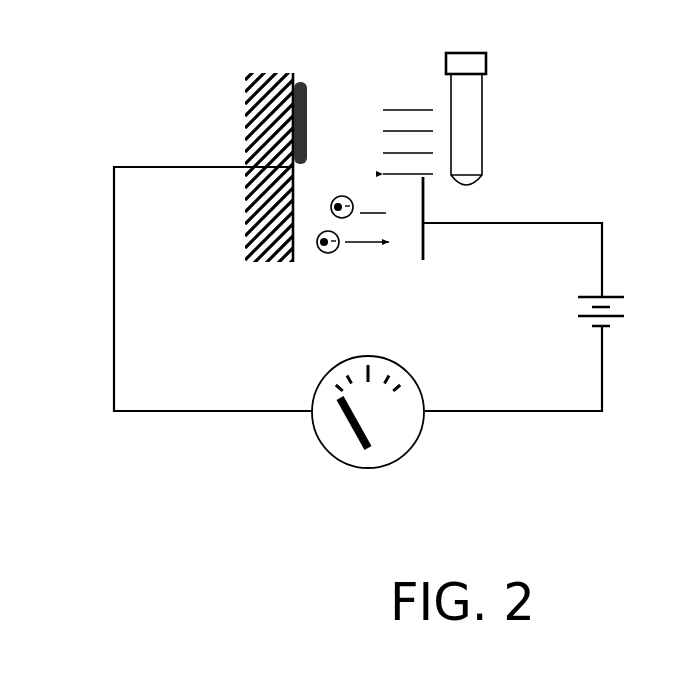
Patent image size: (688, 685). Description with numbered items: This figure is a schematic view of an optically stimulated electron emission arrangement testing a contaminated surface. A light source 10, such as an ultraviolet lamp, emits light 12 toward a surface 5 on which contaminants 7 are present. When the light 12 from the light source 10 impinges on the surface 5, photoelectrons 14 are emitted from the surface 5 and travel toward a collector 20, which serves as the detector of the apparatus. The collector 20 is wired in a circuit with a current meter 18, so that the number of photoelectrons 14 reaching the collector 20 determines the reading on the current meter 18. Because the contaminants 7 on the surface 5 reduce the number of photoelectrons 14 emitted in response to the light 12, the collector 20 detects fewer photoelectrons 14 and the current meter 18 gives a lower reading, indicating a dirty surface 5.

The surface 5 is at (280, 202).
The contaminants 7 is at (307, 97).
The light source 10 is at (482, 113).
The light 12 is at (413, 110).
The photoelectrons 14 is at (355, 246).
The current meter 18 is at (400, 455).
The collector 20 is at (425, 241).